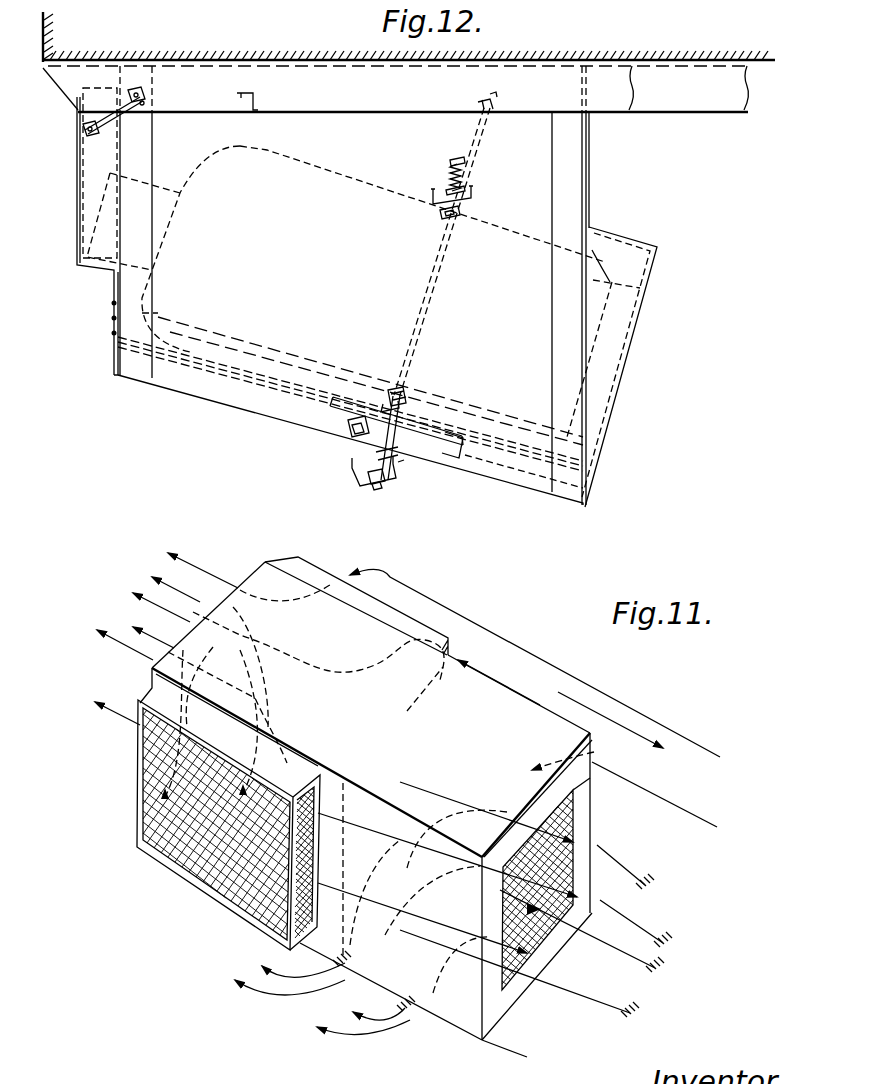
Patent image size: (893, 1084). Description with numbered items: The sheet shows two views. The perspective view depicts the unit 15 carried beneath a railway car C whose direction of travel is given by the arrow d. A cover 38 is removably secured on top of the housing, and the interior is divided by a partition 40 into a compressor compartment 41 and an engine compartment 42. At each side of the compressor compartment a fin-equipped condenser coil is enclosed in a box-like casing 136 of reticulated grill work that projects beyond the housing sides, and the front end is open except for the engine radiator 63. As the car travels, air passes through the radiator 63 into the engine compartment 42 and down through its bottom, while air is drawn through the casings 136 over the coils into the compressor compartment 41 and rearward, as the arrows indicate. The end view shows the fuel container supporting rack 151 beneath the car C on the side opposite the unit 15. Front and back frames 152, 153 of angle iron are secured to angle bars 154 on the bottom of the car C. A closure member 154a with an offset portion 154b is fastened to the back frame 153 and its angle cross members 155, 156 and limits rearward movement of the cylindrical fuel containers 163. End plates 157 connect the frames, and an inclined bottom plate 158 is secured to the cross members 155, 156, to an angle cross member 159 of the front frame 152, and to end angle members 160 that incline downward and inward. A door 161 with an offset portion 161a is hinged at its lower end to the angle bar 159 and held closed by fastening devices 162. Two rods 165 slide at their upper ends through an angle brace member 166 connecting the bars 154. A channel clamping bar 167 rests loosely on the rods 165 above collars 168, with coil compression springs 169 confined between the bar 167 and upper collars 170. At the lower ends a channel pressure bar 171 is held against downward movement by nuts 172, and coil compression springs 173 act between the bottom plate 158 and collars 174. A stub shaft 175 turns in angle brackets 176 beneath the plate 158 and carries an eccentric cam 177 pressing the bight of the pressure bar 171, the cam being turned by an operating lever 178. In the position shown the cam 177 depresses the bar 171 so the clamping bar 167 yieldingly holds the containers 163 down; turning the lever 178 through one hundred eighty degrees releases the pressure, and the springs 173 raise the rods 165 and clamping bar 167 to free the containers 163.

In FIG. 12, the railway car C is at (104, 52).
In FIG. 12, the angle bars 154 is at (630, 70).
In FIG. 12, the closure member 154a is at (590, 210).
In FIG. 12, the offset portion 154b is at (644, 292).
In FIG. 12, the fastening devices 162 is at (83, 108).
In FIG. 12, the front frame 152 is at (146, 140).
In FIG. 12, the closure member or door 161 is at (112, 288).
In FIG. 12, the offset portion 161a is at (85, 203).
In FIG. 12, the angle cross member 159 is at (145, 332).
In FIG. 12, the end angle members 160 is at (262, 412).
In FIG. 12, the cylindrical fuel containers 163 is at (297, 165).
In FIG. 12, the angle cross member 155 is at (597, 457).
In FIG. 12, the angle cross member 156 is at (593, 488).
In FIG. 12, the end plates 157 is at (369, 156).
In FIG. 12, the rods 165 is at (428, 322).
In FIG. 12, the angle brace member 166 is at (493, 100).
In FIG. 12, the upper collars 170 is at (455, 165).
In FIG. 12, the coil compression springs 169 is at (470, 181).
In FIG. 12, the channel clamping bar 167 is at (478, 200).
In FIG. 12, the collars 168 is at (462, 222).
In FIG. 12, the fuel container supporting rack 151 is at (590, 128).
In FIG. 12, the back frame 153 is at (582, 181).
In FIG. 12, the collars 174 is at (390, 388).
In FIG. 12, the coil compression springs 173 is at (400, 410).
In FIG. 12, the angle brackets 176 is at (345, 412).
In FIG. 12, the stub shaft 175 is at (355, 434).
In FIG. 12, the channel pressure bar 171 is at (420, 460).
In FIG. 12, the operating lever 178 is at (365, 450).
In FIG. 12, the nuts 172 is at (362, 480).
In FIG. 12, the bottom plate 158 is at (450, 455).
In FIG. 12, the cam 177 is at (405, 458).
In FIG. 11, the cover 38 is at (490, 703).
In FIG. 11, the engine compartment 42 is at (594, 753).
In FIG. 11, the unit 15 is at (516, 1011).
In FIG. 11, the engine radiator 63 is at (567, 862).
In FIG. 11, the casing 136 is at (425, 628).
In FIG. 11, the arrow d is at (627, 732).
In FIG. 11, the partition 40 is at (407, 711).
In FIG. 11, the compressor compartment 41 is at (273, 588).